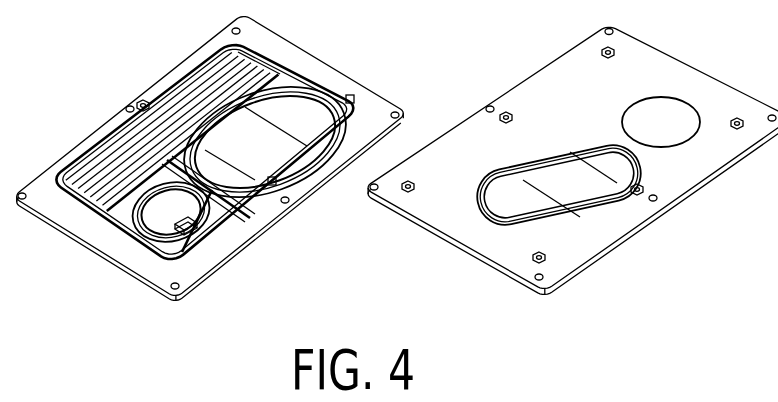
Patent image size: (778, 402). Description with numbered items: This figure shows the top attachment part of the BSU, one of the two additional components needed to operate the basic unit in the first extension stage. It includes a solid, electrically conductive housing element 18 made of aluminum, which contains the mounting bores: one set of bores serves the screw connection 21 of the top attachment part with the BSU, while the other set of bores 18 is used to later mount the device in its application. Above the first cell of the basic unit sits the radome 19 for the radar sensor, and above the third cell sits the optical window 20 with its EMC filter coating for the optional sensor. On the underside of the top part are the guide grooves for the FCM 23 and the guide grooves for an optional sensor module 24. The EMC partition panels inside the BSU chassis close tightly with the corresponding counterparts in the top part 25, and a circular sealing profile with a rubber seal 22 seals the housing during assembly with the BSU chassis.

The housing element 18 is at (489, 103).
The radome 19 is at (565, 187).
The optical window 20 is at (663, 118).
The screw connection 21 is at (234, 31).
The rubber seal 22 is at (313, 78).
The guide grooves for the FCM 23 is at (118, 153).
The guide grooves for an optional sensor module 24 is at (191, 227).
The counterparts in the top part 25 is at (163, 163).